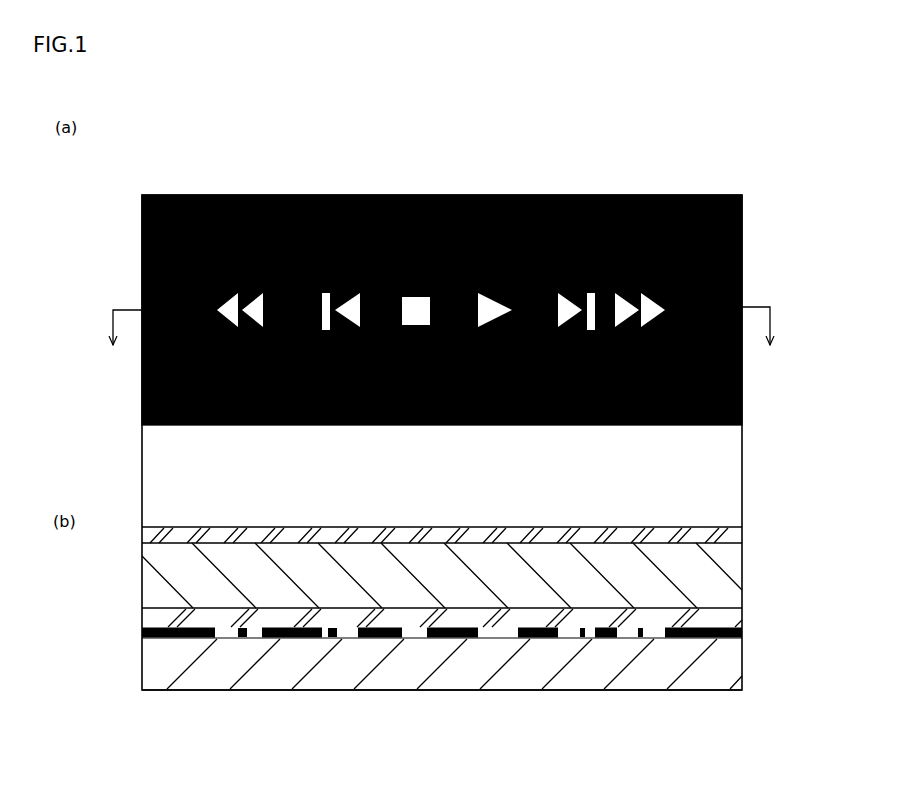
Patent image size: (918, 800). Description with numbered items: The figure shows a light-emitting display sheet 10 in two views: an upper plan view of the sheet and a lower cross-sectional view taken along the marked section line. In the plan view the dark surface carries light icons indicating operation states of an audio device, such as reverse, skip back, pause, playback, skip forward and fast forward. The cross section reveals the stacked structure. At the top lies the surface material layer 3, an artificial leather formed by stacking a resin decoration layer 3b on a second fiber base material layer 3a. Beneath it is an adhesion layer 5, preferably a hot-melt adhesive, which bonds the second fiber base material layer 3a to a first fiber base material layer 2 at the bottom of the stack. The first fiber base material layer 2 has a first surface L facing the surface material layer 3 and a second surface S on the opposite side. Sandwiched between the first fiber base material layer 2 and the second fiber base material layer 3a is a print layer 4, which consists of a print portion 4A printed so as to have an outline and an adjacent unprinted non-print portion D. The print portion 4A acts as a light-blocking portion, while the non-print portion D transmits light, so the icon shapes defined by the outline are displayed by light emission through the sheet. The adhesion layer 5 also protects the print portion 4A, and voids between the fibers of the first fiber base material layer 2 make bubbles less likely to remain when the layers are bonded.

The light-emitting display sheet 10 is at (132, 162).
The decoration layer 3b is at (742, 203).
The surface material layer 3 is at (782, 527).
The second fiber base material layer 3a is at (742, 577).
The adhesion layer 5 is at (742, 624).
The first fiber base material layer 2 is at (782, 637).
The print layer 4 is at (731, 697).
The print portion 4A is at (683, 642).
The non-print portion D is at (656, 641).
The first surface L is at (163, 642).
The second surface S is at (158, 692).